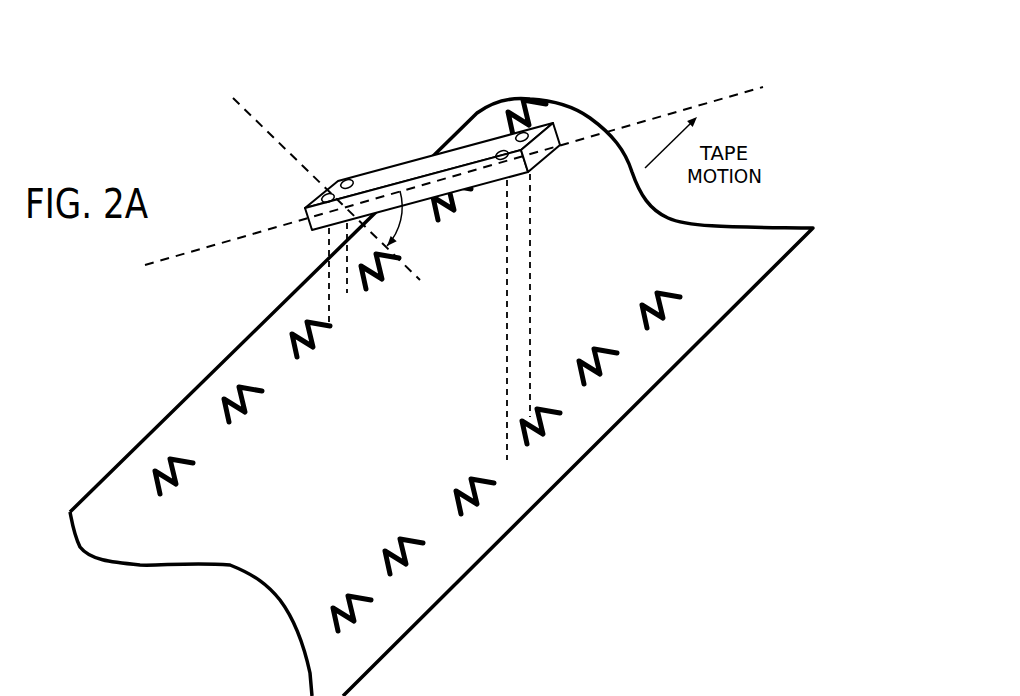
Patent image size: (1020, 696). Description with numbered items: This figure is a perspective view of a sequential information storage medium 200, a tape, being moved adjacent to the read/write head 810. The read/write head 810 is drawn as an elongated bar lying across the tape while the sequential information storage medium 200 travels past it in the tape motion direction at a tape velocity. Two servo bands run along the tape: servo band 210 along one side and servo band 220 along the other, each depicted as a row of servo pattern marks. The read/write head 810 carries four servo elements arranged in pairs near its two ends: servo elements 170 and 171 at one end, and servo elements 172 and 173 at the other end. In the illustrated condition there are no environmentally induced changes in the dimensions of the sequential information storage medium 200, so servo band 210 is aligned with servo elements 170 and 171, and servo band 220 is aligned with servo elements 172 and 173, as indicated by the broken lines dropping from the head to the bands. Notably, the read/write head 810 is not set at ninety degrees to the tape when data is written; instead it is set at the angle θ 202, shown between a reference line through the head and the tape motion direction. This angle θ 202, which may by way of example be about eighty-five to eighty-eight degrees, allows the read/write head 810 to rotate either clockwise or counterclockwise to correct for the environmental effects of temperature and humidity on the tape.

The read/write head 810 is at (412, 146).
The servo element 170 is at (323, 195).
The servo element 171 is at (343, 179).
The servo element 172 is at (506, 160).
The servo element 173 is at (528, 141).
The sequential information storage medium 200 is at (118, 538).
The angle θ 202 is at (391, 247).
The servo band 210 is at (545, 98).
The servo band 220 is at (327, 626).